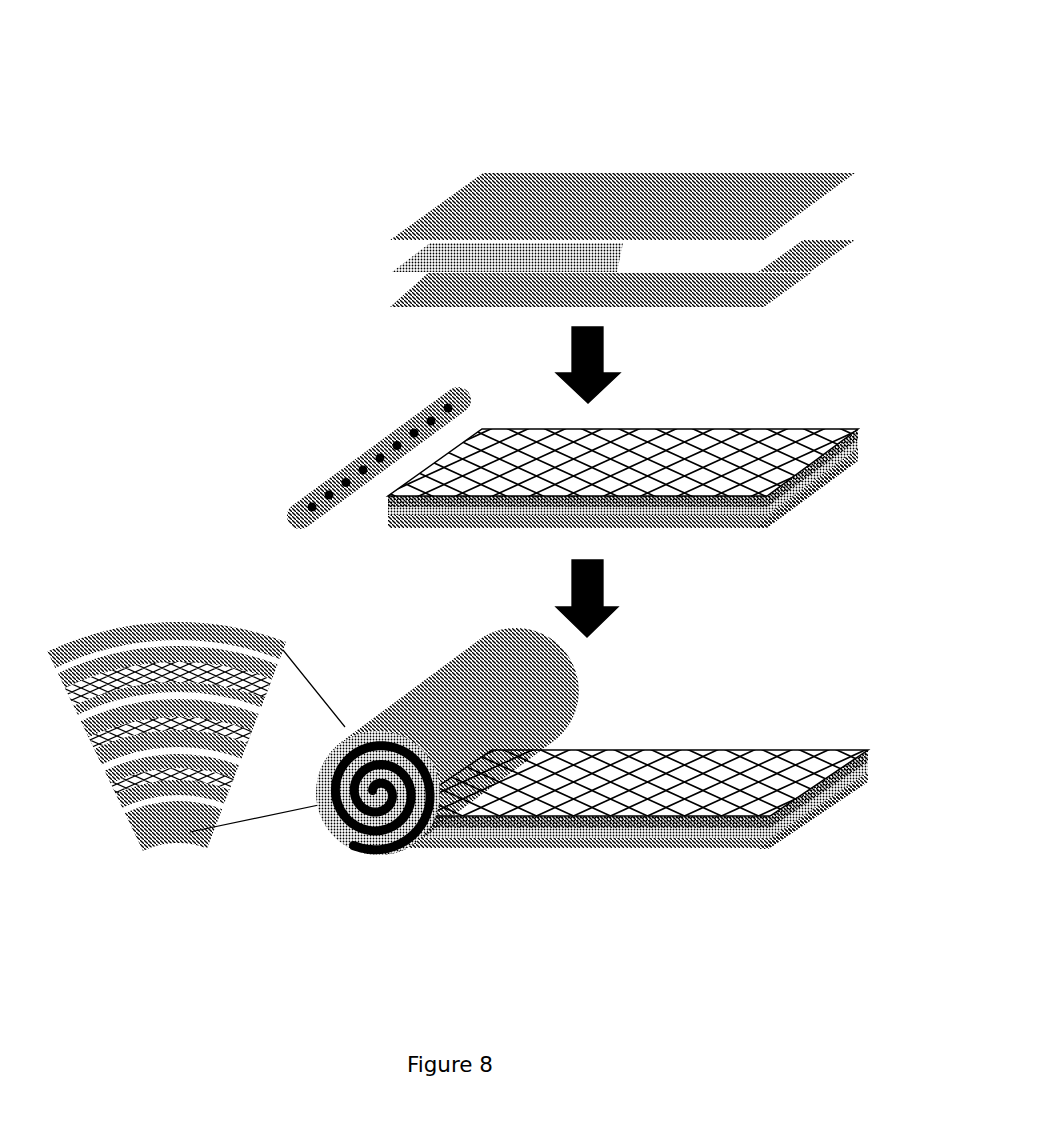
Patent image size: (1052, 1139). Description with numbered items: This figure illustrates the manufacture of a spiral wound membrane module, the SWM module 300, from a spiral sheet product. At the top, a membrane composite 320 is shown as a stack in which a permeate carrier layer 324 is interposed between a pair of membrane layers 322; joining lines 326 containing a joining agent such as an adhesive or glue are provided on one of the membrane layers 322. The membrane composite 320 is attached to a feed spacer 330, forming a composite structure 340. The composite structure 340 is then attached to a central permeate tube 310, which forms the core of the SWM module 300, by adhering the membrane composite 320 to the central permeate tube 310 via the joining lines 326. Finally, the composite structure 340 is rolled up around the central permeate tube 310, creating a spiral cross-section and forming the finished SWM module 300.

The SWM module 300 is at (176, 138).
The central permeate tube 310 is at (348, 462).
The membrane composite 320 is at (383, 187).
The membrane layers 322 is at (723, 205).
The permeate carrier layer 324 is at (806, 232).
The joining lines 326 is at (645, 230).
The feed spacer 330 is at (573, 447).
The composite structure 340 is at (174, 617).